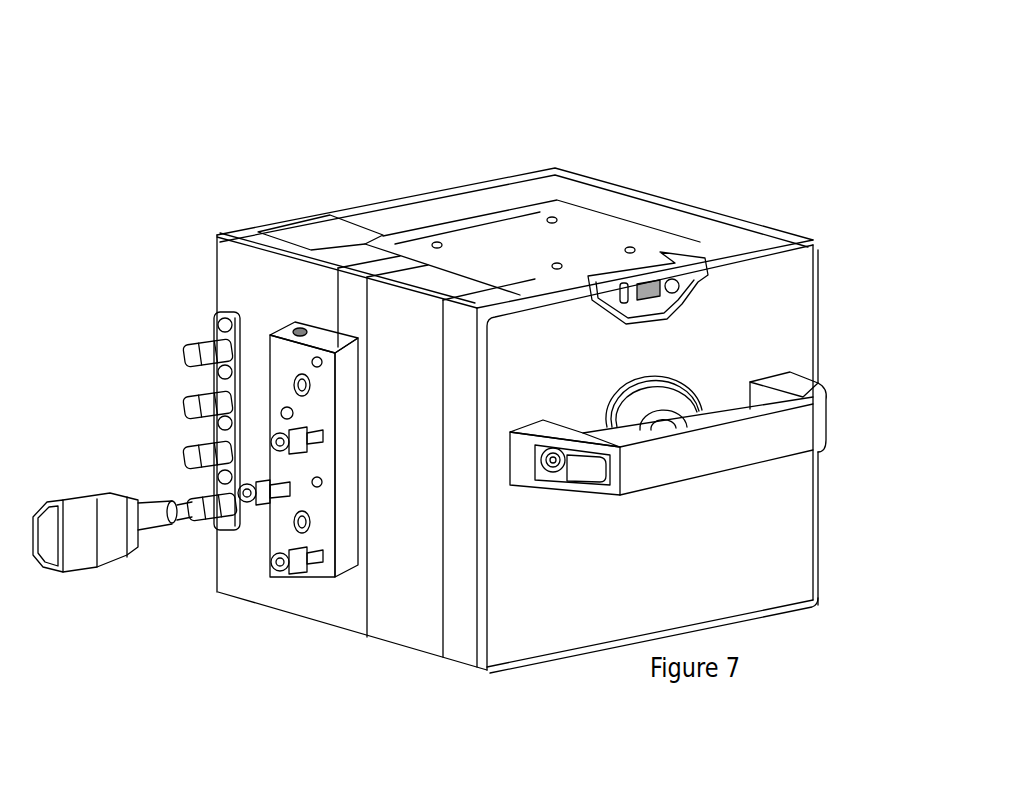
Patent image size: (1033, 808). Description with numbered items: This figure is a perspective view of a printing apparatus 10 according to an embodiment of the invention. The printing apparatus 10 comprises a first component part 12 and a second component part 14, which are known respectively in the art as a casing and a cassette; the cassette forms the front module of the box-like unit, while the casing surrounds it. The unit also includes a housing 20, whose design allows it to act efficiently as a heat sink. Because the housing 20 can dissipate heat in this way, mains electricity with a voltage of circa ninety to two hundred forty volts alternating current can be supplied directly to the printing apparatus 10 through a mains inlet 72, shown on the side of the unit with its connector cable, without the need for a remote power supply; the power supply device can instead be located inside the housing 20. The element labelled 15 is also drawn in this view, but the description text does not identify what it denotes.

The printing apparatus 10 is at (287, 68).
The first component part 12 is at (620, 187).
The second component part 14 is at (730, 553).
The side connector block 15 is at (528, 593).
The housing 20 is at (514, 188).
The mains inlet 72 is at (120, 427).